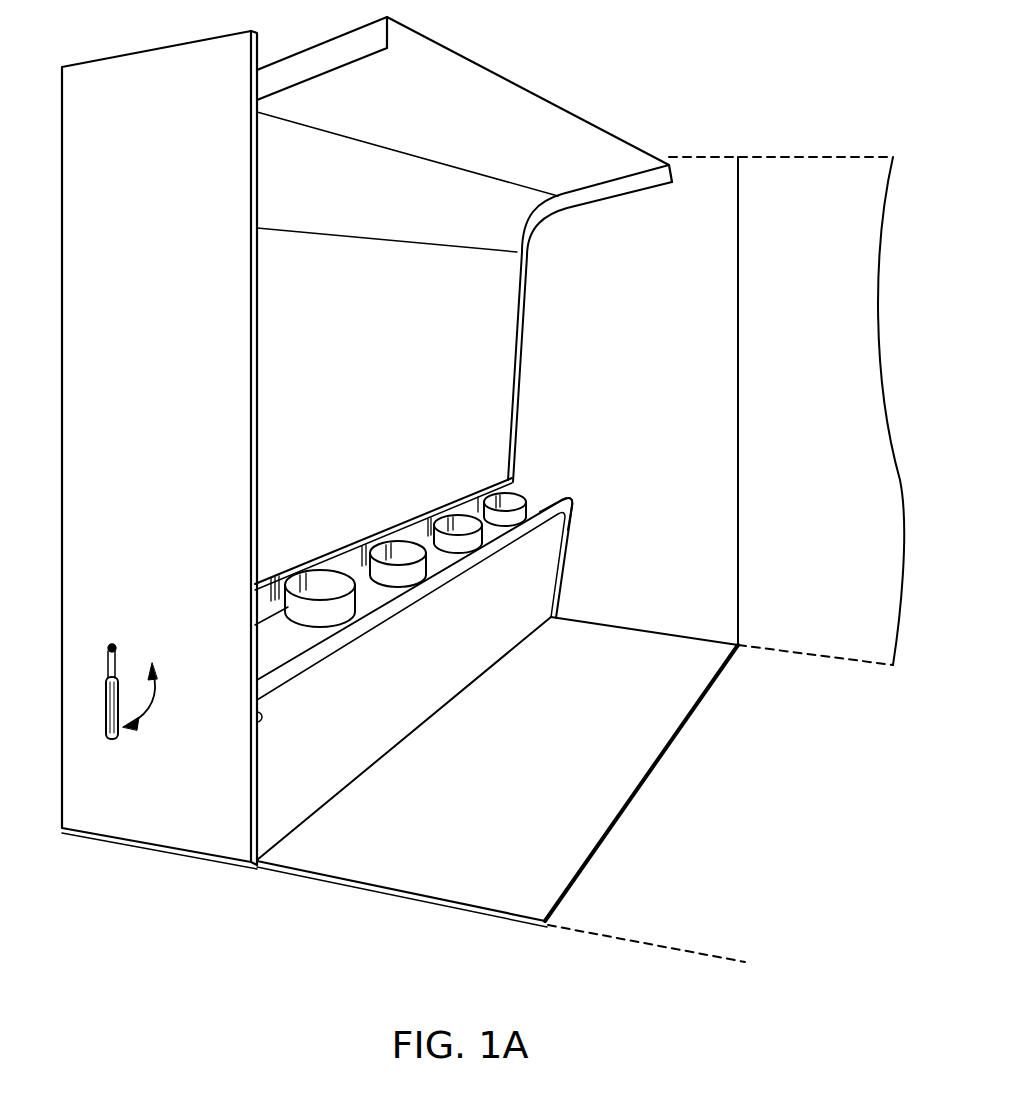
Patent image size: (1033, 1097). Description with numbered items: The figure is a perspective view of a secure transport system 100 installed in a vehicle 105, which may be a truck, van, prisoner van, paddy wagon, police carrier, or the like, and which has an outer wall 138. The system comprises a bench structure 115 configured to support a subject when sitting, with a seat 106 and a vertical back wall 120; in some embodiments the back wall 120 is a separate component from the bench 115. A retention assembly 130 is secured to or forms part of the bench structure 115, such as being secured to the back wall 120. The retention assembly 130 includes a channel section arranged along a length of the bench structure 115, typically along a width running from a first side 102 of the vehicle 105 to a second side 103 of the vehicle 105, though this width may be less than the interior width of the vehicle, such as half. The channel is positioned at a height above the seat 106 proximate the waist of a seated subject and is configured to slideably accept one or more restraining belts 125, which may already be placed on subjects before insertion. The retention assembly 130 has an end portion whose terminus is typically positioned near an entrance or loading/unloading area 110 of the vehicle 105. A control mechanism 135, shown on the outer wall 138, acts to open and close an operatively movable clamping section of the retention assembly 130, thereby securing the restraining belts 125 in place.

The secure transport system 100 is at (752, 77).
The first side 102 is at (668, 942).
The second side 103 is at (817, 653).
The vehicle 105 is at (843, 155).
The seat 106 is at (571, 497).
The loading/unloading area 110 is at (417, 872).
The bench structure 115 is at (547, 570).
The vertical back wall 120 is at (505, 343).
The restraining belts 125 is at (322, 580).
The retention assembly 130 is at (280, 580).
The control mechanism 135 is at (110, 645).
The outer wall 138 is at (82, 376).